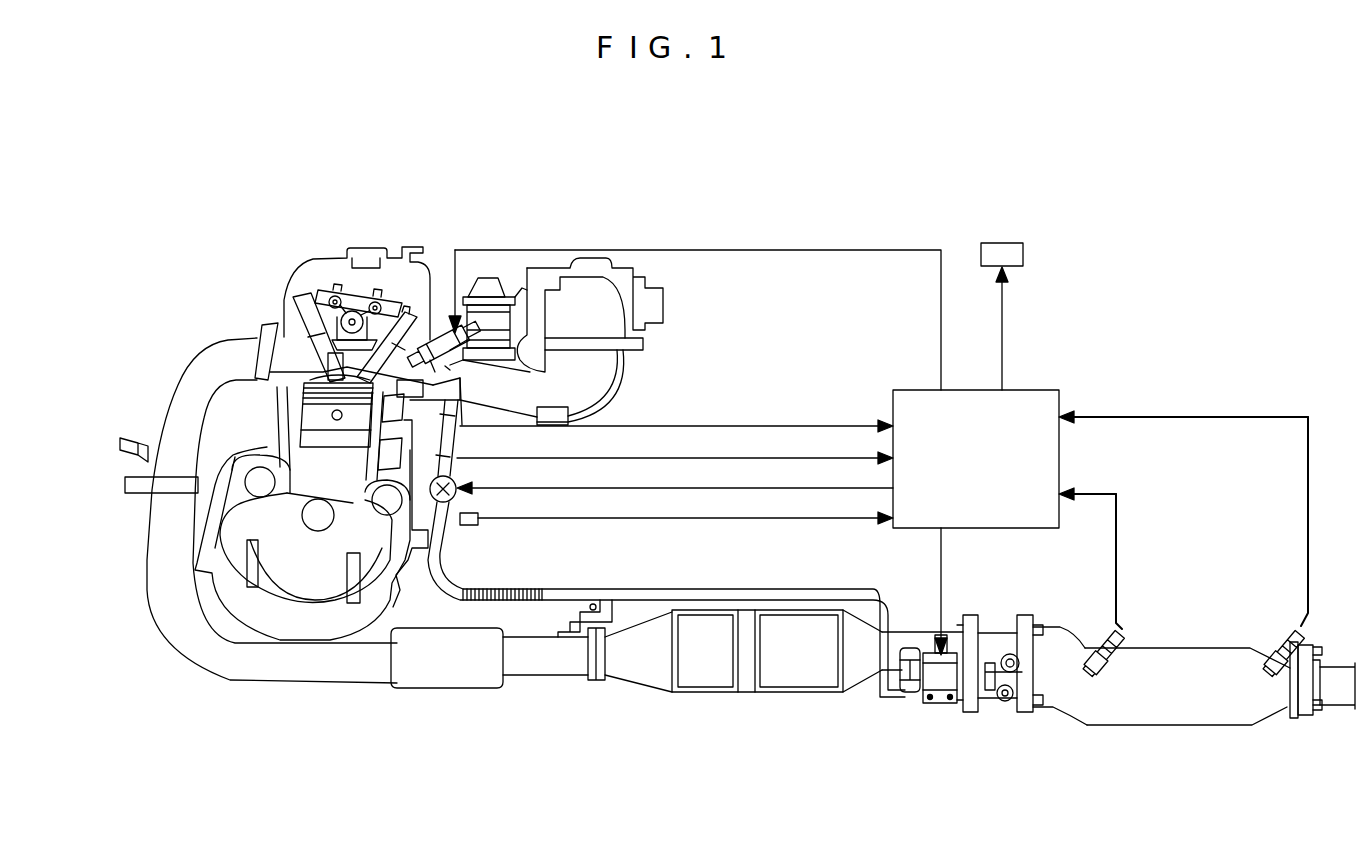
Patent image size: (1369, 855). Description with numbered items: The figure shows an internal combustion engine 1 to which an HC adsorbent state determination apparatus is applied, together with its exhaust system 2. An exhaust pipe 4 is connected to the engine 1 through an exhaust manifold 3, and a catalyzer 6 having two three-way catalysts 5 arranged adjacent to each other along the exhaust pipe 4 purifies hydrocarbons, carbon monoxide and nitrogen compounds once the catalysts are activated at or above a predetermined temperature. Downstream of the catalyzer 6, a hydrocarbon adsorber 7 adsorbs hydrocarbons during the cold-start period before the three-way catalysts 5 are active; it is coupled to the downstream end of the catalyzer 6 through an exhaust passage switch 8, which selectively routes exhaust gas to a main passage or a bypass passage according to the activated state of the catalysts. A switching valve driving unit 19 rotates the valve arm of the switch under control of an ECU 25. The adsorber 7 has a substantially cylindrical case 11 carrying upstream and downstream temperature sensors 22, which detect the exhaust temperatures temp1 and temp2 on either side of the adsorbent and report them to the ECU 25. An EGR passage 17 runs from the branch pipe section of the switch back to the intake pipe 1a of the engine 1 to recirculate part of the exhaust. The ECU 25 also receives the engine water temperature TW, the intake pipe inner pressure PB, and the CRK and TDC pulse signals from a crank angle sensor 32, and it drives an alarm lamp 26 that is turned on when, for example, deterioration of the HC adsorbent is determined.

The internal combustion engine 1 is at (328, 230).
The intake pipe 1a is at (515, 390).
The exhaust system 2 is at (1092, 210).
The exhaust manifold 3 is at (257, 330).
The exhaust pipe 4 is at (215, 680).
The three-way catalysts 5 is at (780, 658).
The catalyzer 6 is at (817, 718).
The hydrocarbon adsorber 7 is at (1220, 629).
The exhaust passage switch 8 is at (1005, 605).
The case 11 is at (1220, 648).
The EGR passage 17 is at (900, 700).
The switching valve driving unit 19 is at (948, 708).
The temperature sensors 22 is at (1135, 610).
The ECU 25 is at (1030, 390).
The alarm lamp 26 is at (1000, 243).
The crank angle sensor 32 is at (476, 526).